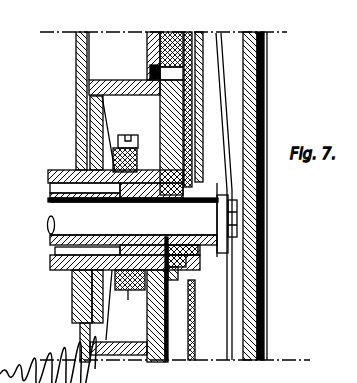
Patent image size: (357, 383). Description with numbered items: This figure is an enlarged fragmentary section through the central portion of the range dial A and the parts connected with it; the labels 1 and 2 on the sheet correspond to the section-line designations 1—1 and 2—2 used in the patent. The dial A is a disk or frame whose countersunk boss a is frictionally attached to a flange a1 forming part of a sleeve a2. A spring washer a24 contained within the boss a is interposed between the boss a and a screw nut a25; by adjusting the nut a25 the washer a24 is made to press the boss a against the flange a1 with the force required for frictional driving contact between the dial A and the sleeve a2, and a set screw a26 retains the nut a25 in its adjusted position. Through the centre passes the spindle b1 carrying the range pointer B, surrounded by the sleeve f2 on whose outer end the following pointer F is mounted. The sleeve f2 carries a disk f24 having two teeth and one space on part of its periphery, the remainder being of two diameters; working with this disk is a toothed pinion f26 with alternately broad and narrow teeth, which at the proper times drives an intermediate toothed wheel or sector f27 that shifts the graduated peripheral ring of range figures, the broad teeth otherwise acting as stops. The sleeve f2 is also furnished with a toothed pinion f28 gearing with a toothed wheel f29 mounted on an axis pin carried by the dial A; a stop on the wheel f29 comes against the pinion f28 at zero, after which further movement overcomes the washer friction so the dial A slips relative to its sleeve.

The cylinder 2 is at (175, 184).
The range dial A is at (104, 56).
The boss a is at (77, 119).
The flange a1 is at (78, 288).
The sleeve a2 is at (55, 175).
The spindle b1 is at (78, 217).
The sleeve f2 is at (50, 238).
The ring 1 is at (80, 332).
The spring washer a24 is at (148, 137).
The screw nut a25 is at (129, 299).
The set screw a26 is at (150, 145).
The disk f24 is at (263, 118).
The toothed pinion f26 is at (219, 93).
The intermediate toothed wheel or sector f27 is at (192, 96).
The toothed pinion f28 is at (150, 170).
The toothed wheel f29 is at (165, 310).
The following pointer F is at (205, 75).
The range pointer B is at (230, 108).